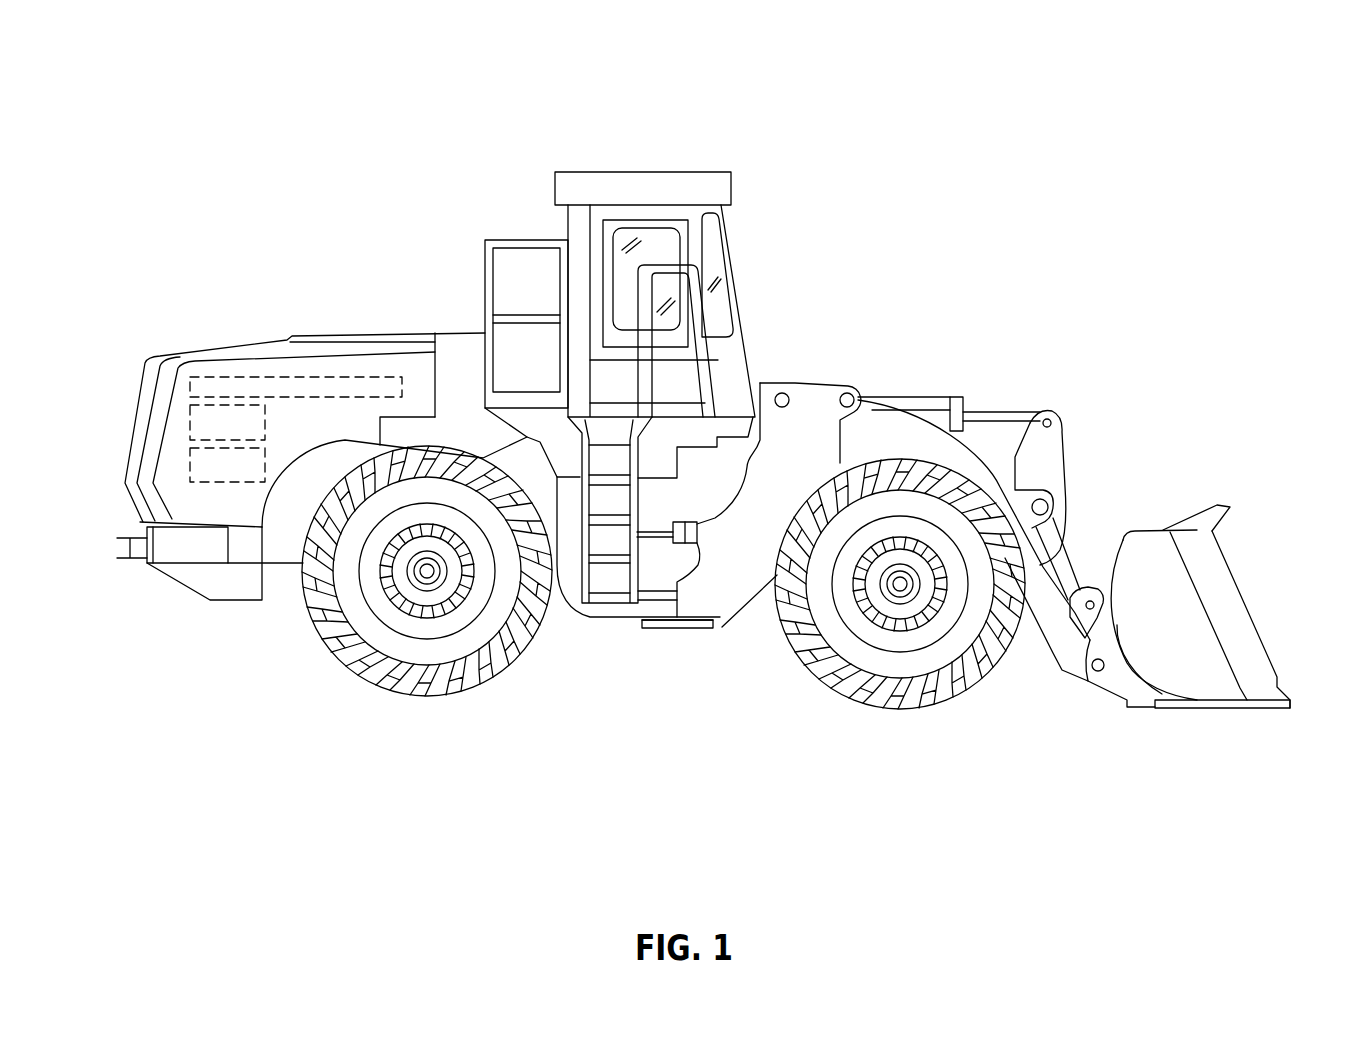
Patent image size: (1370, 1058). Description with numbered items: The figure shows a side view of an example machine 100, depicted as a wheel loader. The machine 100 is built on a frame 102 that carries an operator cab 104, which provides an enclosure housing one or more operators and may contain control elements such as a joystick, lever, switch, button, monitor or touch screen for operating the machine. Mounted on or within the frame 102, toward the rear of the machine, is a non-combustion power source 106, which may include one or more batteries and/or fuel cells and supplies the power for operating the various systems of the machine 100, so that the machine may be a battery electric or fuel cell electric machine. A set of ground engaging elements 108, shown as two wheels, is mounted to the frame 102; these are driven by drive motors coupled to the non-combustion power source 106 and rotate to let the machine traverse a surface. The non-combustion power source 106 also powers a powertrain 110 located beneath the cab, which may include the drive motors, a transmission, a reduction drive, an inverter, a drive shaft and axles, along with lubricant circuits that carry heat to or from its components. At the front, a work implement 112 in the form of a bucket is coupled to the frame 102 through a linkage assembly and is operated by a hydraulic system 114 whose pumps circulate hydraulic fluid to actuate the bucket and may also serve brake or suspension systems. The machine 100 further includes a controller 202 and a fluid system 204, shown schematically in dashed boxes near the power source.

The machine 100 is at (232, 128).
The frame 102 is at (567, 605).
The operator cab 104 is at (524, 156).
The non-combustion power source 106 is at (228, 387).
The ground engaging elements 108 is at (462, 694).
The powertrain 110 is at (665, 647).
The work implement 112 is at (1250, 520).
The hydraulic system 114 is at (1008, 385).
The controller 202 is at (248, 477).
The fluid system 204 is at (248, 434).